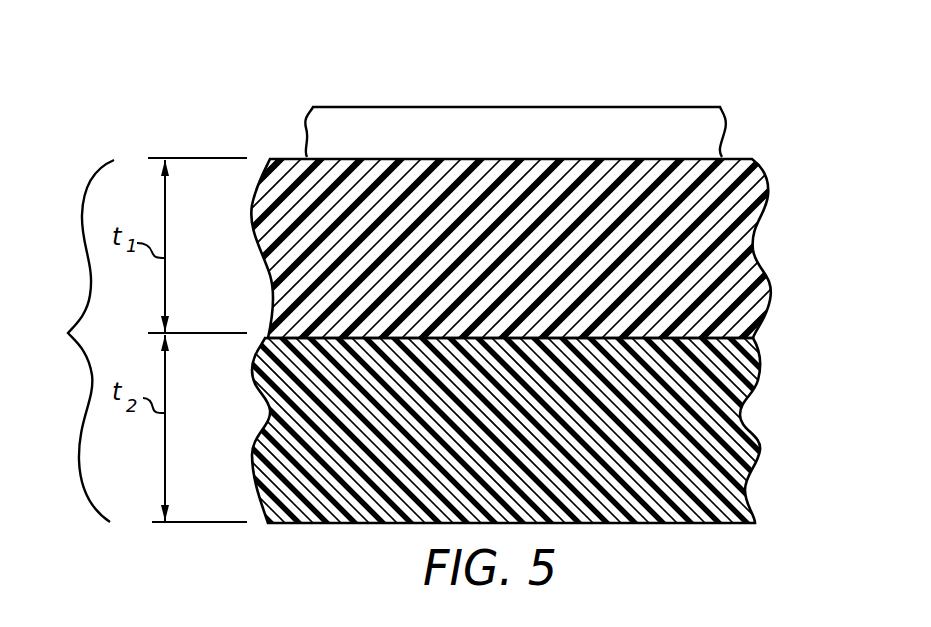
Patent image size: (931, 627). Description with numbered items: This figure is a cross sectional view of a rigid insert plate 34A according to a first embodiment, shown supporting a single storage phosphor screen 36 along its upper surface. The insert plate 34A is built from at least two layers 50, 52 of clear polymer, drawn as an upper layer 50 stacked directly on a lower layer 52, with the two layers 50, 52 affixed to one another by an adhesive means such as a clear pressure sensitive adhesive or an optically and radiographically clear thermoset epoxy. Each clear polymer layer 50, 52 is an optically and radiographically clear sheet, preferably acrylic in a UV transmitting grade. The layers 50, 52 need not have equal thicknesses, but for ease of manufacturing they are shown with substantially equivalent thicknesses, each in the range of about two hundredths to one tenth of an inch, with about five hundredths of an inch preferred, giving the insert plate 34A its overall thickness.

The storage phosphor screen 36 is at (595, 107).
The clear polymer layer 50 is at (752, 210).
The clear polymer layer 52 is at (740, 415).
The insert plate 34A is at (60, 341).